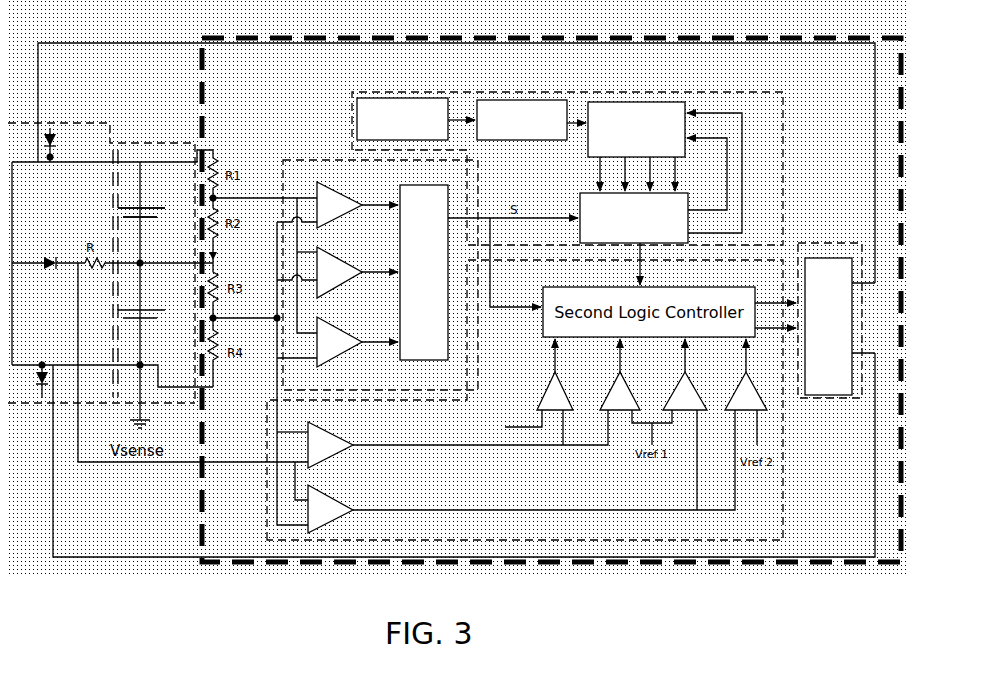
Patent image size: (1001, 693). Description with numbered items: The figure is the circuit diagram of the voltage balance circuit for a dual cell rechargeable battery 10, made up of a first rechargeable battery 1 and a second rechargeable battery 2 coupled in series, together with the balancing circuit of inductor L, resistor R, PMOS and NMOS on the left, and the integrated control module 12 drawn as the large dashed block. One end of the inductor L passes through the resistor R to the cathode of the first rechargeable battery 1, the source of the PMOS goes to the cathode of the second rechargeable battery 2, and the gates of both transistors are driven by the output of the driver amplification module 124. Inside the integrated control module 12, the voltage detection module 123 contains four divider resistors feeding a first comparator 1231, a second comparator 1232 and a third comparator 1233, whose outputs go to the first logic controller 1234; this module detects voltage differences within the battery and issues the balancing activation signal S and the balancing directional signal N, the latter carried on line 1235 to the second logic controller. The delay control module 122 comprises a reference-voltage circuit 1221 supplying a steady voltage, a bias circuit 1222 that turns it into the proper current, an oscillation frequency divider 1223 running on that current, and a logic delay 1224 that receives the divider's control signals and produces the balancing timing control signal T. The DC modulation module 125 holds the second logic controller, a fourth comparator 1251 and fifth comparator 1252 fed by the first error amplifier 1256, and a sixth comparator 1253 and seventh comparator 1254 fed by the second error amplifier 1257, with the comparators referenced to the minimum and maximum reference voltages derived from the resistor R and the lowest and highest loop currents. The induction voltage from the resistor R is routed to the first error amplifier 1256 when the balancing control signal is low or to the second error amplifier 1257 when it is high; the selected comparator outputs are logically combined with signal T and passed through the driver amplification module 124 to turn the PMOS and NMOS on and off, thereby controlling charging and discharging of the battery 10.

The first rechargeable battery 1 is at (72, 123).
The second rechargeable battery 2 is at (157, 218).
The dual cell rechargeable battery 10 is at (138, 143).
The integrated control module 12 is at (762, 40).
The delay control module 122 is at (785, 148).
The voltage detection module 123 is at (330, 160).
The driver amplification module 124 is at (817, 243).
The DC modulation module 125 is at (265, 512).
The reference-voltage circuit 1221 is at (430, 98).
The bias circuit 1222 is at (543, 100).
The oscillation frequency divider 1223 is at (642, 102).
The logic delay 1224 is at (578, 200).
The first comparator 1231 is at (348, 192).
The second comparator 1232 is at (345, 252).
The third comparator 1233 is at (345, 324).
The first logic controller 1234 is at (385, 360).
The N signal line 1235 is at (542, 304).
The fourth comparator 1251 is at (545, 392).
The fifth comparator 1252 is at (612, 396).
The sixth comparator 1253 is at (675, 395).
The seventh comparator 1254 is at (738, 392).
The first error amplifier 1256 is at (328, 430).
The second error amplifier 1257 is at (330, 492).